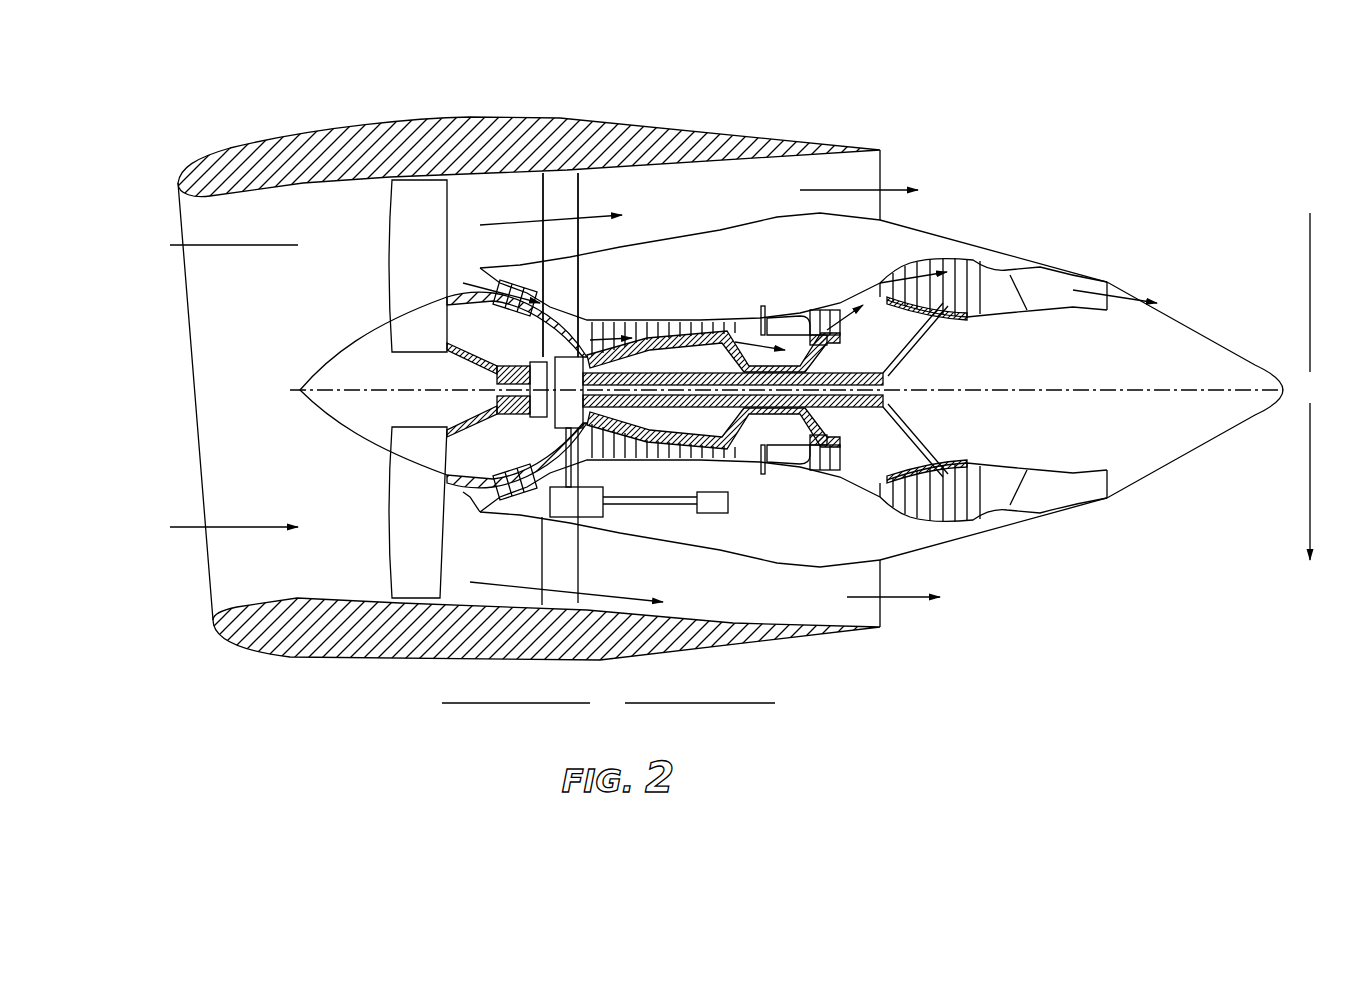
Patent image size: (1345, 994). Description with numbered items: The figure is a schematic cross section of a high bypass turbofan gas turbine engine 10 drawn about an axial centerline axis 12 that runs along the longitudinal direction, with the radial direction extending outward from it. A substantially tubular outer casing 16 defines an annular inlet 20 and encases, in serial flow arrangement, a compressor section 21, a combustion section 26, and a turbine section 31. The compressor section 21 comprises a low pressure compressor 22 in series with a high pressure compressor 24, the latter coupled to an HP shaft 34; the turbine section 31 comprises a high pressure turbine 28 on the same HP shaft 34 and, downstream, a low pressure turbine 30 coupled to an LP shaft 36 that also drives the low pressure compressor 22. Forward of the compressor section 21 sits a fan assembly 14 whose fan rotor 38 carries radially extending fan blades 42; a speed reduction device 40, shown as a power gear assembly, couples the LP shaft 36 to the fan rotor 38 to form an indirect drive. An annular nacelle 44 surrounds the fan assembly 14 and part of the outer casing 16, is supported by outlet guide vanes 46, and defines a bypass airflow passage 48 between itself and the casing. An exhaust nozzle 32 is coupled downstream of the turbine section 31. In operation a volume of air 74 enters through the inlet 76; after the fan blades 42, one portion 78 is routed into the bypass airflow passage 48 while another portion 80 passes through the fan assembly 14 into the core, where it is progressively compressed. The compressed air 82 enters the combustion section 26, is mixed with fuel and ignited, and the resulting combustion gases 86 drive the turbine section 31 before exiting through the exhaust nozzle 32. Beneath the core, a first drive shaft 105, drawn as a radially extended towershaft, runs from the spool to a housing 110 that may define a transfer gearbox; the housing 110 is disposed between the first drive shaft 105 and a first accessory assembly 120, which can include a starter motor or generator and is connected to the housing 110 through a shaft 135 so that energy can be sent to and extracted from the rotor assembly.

The gas turbine engine 10 is at (1020, 140).
The axial centerline axis 12 is at (1045, 390).
The fan assembly 14 is at (443, 334).
The outer casing 16 is at (773, 210).
The annular inlet 20 is at (482, 497).
The compressor section 21 is at (640, 297).
The low pressure compressor 22 is at (540, 478).
The high pressure compressor 24 is at (610, 447).
The combustion section 26 is at (780, 453).
The high pressure turbine 28 is at (838, 450).
The low pressure turbine 30 is at (963, 527).
The turbine section 31 is at (918, 247).
The exhaust nozzle 32 is at (1030, 503).
The HP shaft 34 is at (833, 357).
The LP shaft 36 is at (917, 343).
The fan rotor 38 is at (450, 348).
The speed reduction device 40 is at (537, 357).
The fan blades 42 is at (410, 238).
The nacelle 44 is at (390, 122).
The outlet guide vanes 46 is at (567, 200).
The bypass airflow passage 48 is at (595, 204).
The volume of air 74 is at (213, 245).
The inlet 76 is at (280, 550).
The bypass air portion 78 is at (893, 195).
The core air portion 80 is at (475, 280).
The compressed air 82 is at (587, 320).
The combustion gases 86 is at (822, 322).
The first drive shaft 105 is at (575, 450).
The housing 110 is at (587, 493).
The first accessory assembly 120 is at (723, 503).
The shaft 135 is at (657, 503).